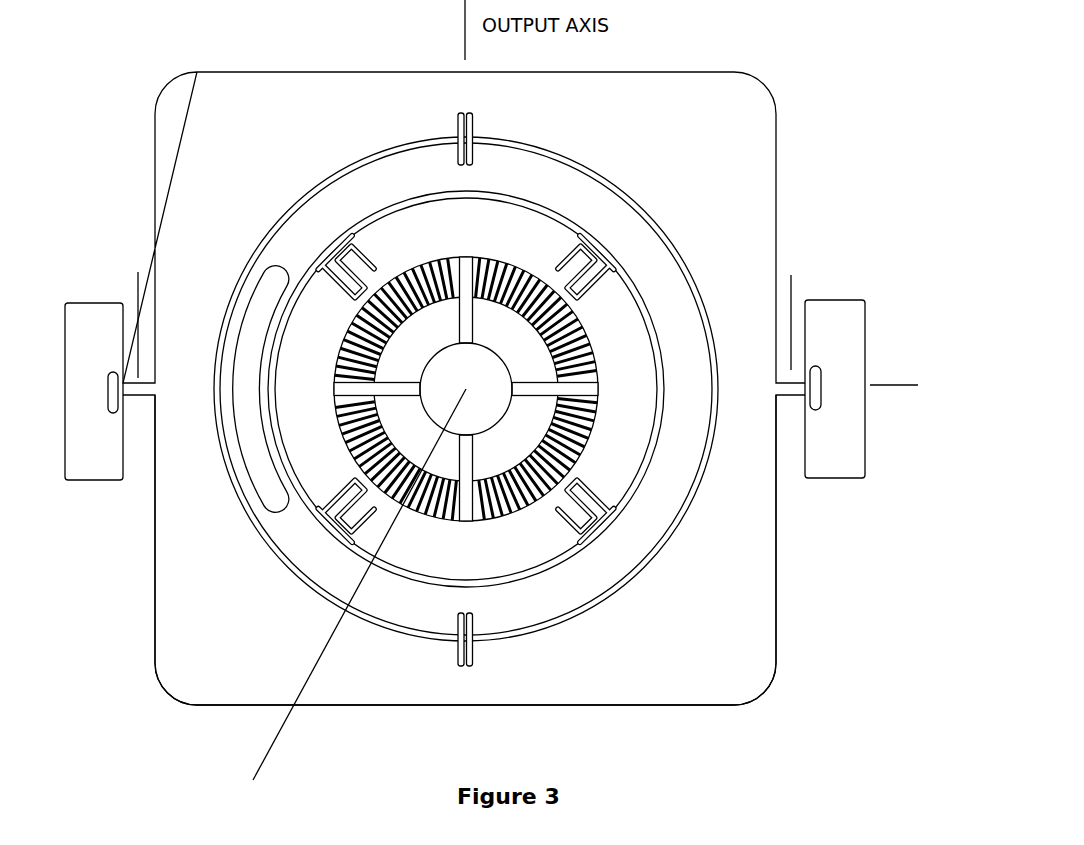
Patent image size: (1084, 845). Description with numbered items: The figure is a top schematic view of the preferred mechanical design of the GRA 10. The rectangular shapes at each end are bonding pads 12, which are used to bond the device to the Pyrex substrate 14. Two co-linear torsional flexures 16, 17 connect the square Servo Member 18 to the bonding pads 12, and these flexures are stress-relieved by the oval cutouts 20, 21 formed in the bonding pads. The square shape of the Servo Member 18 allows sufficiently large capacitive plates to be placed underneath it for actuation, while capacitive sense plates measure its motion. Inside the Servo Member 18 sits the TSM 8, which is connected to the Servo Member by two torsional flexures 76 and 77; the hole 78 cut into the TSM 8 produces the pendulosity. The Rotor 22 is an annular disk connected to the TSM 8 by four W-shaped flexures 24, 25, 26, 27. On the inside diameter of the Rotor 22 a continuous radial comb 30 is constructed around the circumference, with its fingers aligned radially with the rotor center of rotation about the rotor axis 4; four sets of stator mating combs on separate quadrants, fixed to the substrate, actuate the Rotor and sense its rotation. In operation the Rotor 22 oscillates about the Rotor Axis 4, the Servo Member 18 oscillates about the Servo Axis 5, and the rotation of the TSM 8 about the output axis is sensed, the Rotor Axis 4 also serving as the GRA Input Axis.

The GRA 10 is at (777, 78).
The Pyrex substrate 14 is at (516, 550).
The Servo Member 18 is at (428, 550).
The torsional flexure 16 is at (138, 311).
The torsional flexure 17 is at (794, 307).
The bonding pad 12 is at (465, 390).
The oval cutout 20 is at (110, 428).
The oval cutout 21 is at (815, 420).
The Servo Axis 5 is at (900, 393).
The TSM 8 is at (575, 190).
The hole 78 is at (248, 332).
The torsional flexure 77 is at (477, 118).
The torsional flexure 76 is at (450, 653).
The Rotor 22 is at (466, 389).
The radial comb 30 is at (415, 255).
The rotor axis 4 is at (382, 561).
The W-shaped flexure 25 is at (333, 292).
The W-shaped flexure 27 is at (600, 292).
The W-shaped flexure 24 is at (330, 488).
The W-shaped flexure 26 is at (600, 490).